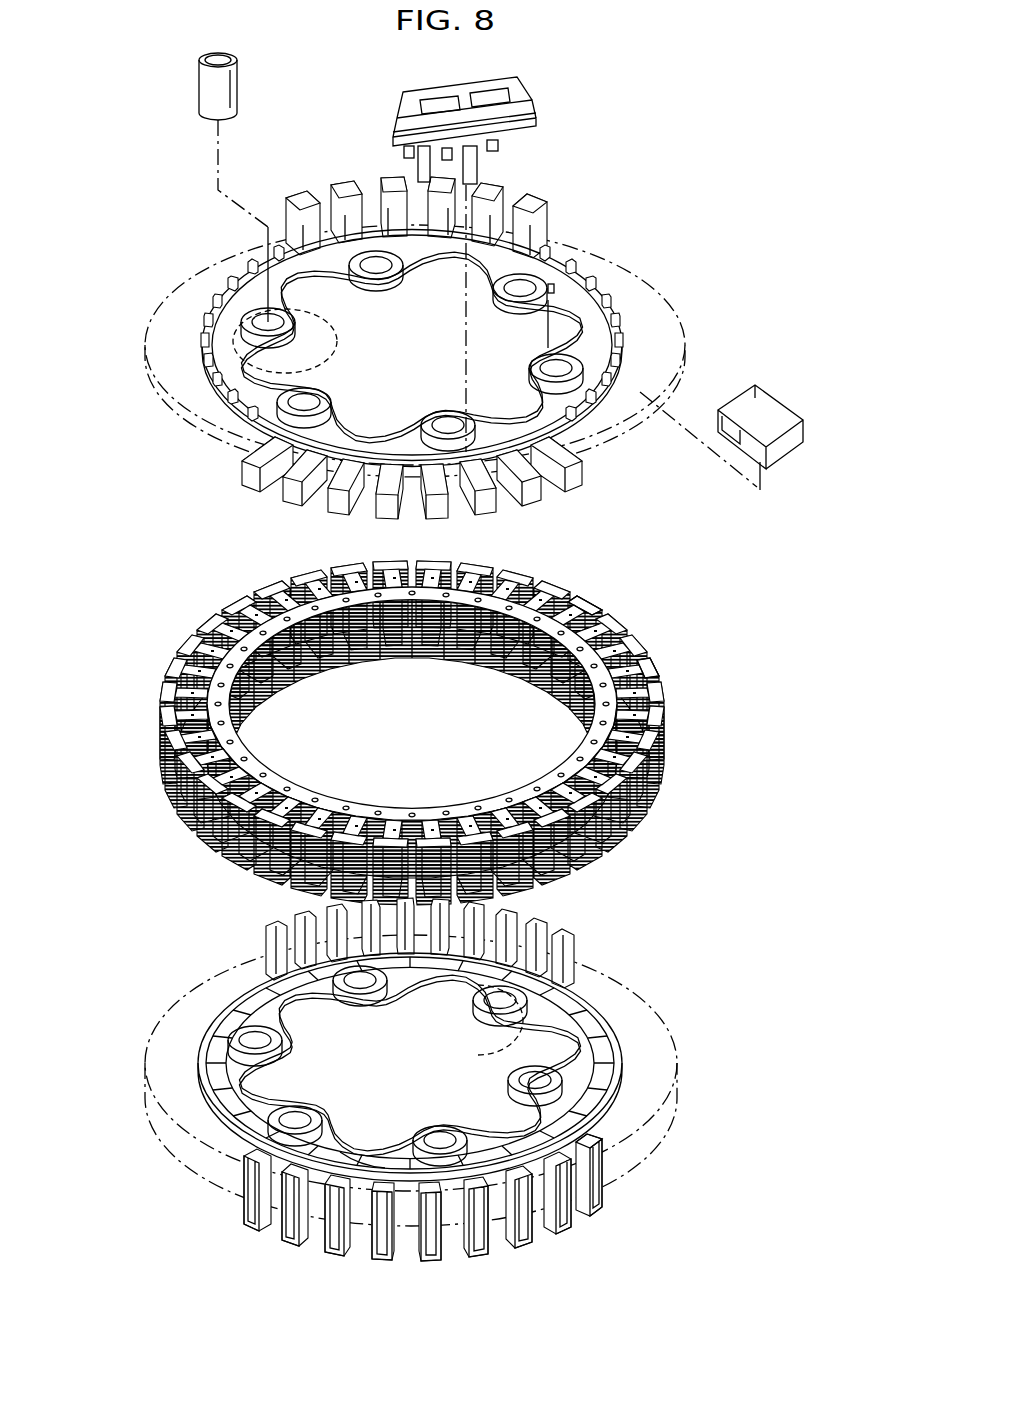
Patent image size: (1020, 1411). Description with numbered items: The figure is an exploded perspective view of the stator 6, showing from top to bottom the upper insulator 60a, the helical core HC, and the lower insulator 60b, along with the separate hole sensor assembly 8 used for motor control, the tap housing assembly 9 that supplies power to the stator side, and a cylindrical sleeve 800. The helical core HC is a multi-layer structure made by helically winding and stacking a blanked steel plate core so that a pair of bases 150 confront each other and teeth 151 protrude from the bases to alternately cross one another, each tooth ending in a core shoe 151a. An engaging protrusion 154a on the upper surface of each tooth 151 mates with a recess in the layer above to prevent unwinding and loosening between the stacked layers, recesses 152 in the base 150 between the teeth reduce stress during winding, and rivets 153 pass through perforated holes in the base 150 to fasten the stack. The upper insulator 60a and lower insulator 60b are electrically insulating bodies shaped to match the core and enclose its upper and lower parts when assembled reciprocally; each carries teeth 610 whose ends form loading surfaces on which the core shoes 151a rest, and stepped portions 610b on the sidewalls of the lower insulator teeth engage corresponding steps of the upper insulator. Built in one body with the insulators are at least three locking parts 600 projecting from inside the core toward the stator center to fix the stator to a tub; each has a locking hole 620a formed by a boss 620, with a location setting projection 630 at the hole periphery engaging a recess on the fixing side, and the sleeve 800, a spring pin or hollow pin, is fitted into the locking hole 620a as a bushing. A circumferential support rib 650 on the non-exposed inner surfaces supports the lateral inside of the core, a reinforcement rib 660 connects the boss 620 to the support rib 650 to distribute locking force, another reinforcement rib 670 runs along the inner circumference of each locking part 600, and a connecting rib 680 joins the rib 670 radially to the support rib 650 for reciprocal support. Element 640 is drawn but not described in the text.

The stator 6 is at (122, 168).
The hole sensor assembly 8 is at (542, 108).
The tap housing assembly 9 is at (770, 405).
The cylindrical sleeve 800 is at (238, 82).
The upper insulator 60a is at (454, 603).
The lower insulator 60b is at (436, 1101).
The locking part 600 is at (290, 349).
The locking hole 620a is at (378, 274).
The location setting projection 630 is at (552, 284).
The helical core HC is at (452, 723).
The base 150 is at (470, 800).
The teeth 151 is at (412, 733).
The core shoe 151a is at (626, 638).
The recesses 152 is at (297, 688).
The rivets 153 is at (365, 808).
The engaging protrusion 154a is at (569, 611).
The guide 640 is at (292, 958).
The support rib 650 is at (615, 1038).
The reinforcement rib 660 is at (265, 1118).
The boss 620 is at (341, 1134).
The reinforcement rib 670 is at (386, 1165).
The connecting rib 680 is at (356, 1165).
The teeth 610 is at (463, 1219).
The stepped portions 610b is at (580, 1200).